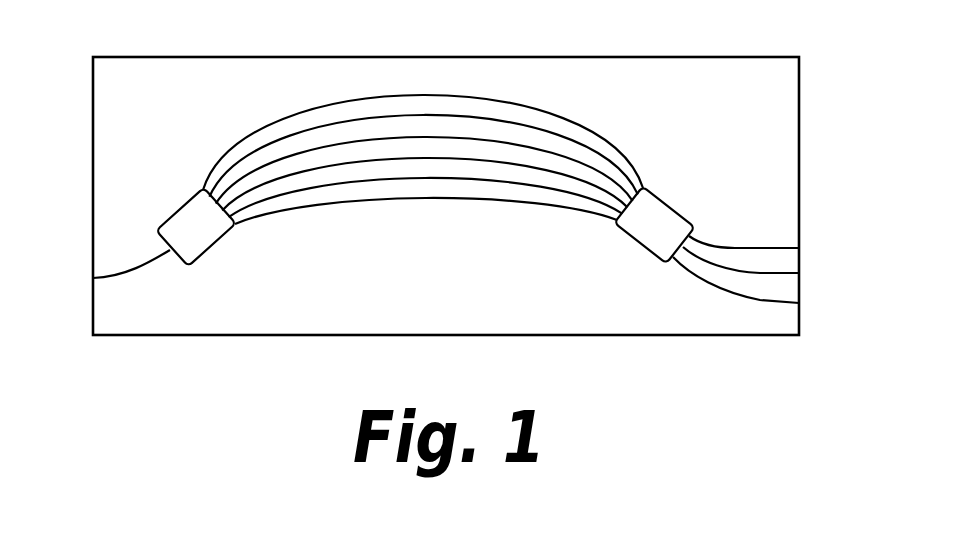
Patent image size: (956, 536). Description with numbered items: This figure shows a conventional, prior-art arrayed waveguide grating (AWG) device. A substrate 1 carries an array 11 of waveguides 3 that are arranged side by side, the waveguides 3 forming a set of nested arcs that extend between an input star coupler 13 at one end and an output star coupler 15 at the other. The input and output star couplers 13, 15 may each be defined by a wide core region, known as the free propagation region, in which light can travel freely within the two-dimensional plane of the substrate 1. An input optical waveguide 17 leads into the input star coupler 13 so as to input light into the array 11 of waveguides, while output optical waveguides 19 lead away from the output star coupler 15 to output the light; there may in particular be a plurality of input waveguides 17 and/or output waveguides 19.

The substrate 1 is at (193, 335).
The waveguides 3 is at (427, 112).
The array of waveguides 11 is at (458, 80).
The input star coupler 13 is at (212, 247).
The output star coupler 15 is at (673, 205).
The input optical waveguide 17 is at (133, 268).
The output optical waveguides 19 is at (737, 247).